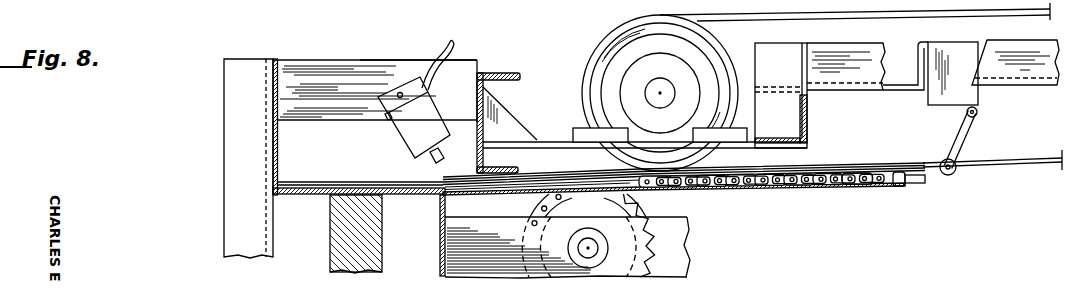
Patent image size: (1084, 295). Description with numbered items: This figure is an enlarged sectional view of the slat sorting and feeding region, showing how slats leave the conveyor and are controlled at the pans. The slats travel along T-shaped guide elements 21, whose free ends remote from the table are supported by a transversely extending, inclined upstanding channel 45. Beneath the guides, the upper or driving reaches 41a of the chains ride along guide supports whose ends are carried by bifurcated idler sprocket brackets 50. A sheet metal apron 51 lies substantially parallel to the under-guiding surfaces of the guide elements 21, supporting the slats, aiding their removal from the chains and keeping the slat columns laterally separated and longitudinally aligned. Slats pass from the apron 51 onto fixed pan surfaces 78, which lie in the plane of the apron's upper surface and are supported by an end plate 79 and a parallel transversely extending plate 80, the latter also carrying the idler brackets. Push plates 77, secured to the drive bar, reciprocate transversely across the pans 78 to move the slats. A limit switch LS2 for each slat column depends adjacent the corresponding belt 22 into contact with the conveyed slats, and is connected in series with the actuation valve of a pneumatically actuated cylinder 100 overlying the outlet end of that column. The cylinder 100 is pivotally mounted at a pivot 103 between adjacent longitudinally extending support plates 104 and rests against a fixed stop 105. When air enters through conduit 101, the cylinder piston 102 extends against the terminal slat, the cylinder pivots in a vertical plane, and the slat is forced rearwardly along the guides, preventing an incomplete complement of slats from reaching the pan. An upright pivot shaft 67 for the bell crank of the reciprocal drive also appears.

The end plate 79 is at (273, 115).
The longitudinally extending support plates 104 is at (335, 63).
The pivotal mounting 103 is at (388, 68).
The conduit 101 is at (434, 54).
The pneumatically actuated cylinder 100 is at (436, 99).
The fixed stop 105 is at (387, 118).
The cylinder piston 102 is at (434, 158).
The push plates 77 is at (318, 182).
The pan surfaces 78 is at (305, 195).
The upstanding channel 45 is at (502, 73).
The upright pivot shaft 67 is at (811, 85).
The limit switch LS2 is at (958, 130).
The belt 22 is at (1015, 163).
The apron 51 is at (757, 190).
The upper or driving reaches 41a is at (856, 187).
The guide elements 21 is at (920, 184).
The transversely extending plate 80 is at (439, 250).
The bifurcated idler sprocket brackets 50 is at (668, 243).